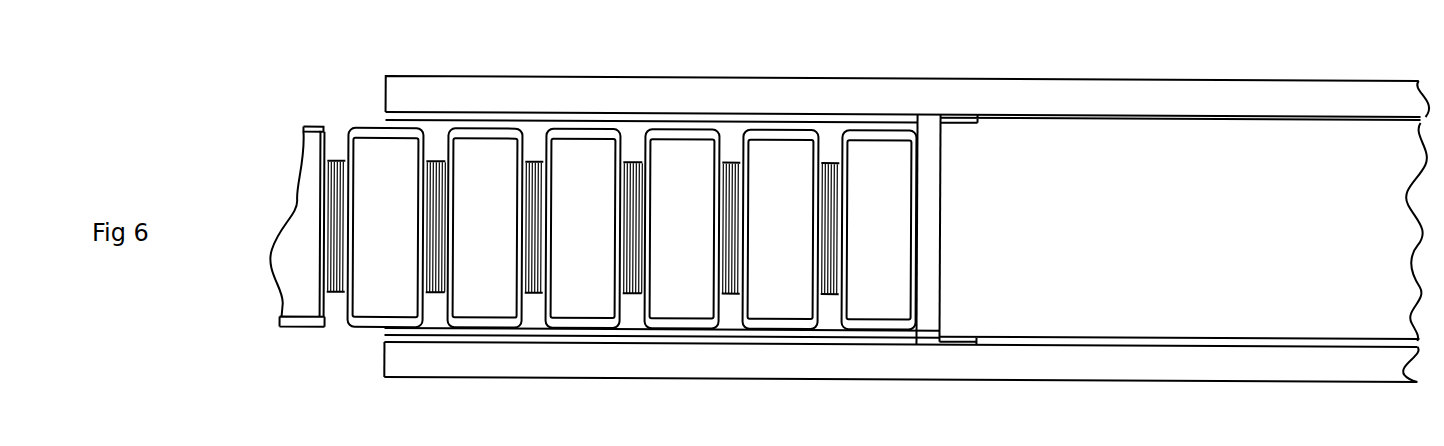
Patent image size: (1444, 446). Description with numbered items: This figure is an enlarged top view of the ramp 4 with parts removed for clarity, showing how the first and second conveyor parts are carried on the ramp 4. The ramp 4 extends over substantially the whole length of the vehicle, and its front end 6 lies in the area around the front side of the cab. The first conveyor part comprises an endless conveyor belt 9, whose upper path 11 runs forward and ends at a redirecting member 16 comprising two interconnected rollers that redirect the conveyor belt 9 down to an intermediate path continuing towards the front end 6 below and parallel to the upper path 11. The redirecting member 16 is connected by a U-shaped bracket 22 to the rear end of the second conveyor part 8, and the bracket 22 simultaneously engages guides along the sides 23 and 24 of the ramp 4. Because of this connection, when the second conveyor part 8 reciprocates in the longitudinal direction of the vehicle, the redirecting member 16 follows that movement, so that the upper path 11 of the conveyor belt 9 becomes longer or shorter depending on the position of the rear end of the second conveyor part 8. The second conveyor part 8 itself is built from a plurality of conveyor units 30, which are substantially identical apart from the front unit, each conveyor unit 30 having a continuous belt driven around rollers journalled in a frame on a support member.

The ramp 4 is at (610, 99).
The front end of the ramp 6 is at (385, 370).
The second conveyor part 8 is at (325, 125).
The endless conveyor belt 9 is at (1045, 149).
The upper path 11 is at (1183, 234).
The redirecting member 16 is at (940, 110).
The U-shaped bracket 22 is at (920, 115).
The side of the ramp 23 is at (787, 98).
The side of the ramp 24 is at (588, 367).
The conveyor unit 30 is at (498, 180).